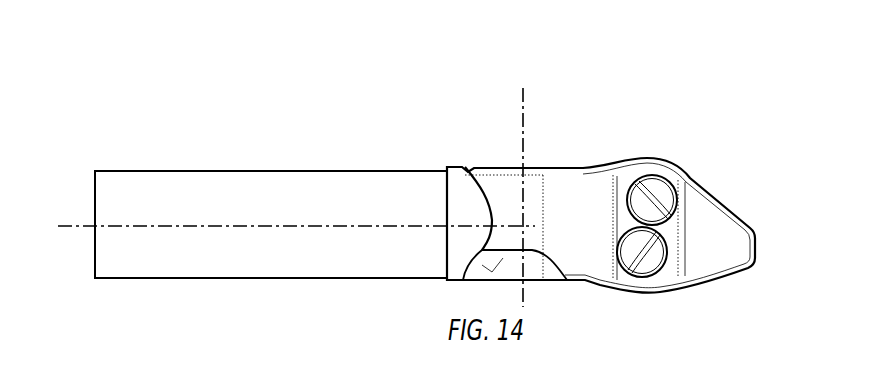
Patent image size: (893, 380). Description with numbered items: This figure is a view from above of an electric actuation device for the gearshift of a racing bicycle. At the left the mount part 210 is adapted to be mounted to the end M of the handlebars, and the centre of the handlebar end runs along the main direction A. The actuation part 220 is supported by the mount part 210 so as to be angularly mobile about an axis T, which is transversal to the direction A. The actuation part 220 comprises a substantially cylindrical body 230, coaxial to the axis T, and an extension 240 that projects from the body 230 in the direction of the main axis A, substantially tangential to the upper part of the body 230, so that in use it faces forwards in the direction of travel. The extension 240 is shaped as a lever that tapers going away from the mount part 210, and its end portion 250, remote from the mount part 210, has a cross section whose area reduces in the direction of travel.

The end of handlebars M is at (156, 182).
The main axis A is at (68, 222).
The axis T is at (527, 100).
The mount part 210 is at (460, 247).
The actuation part 220 is at (583, 168).
The substantially cylindrical body 230 is at (489, 185).
The extension 240 is at (665, 154).
The end portion 250 is at (715, 260).